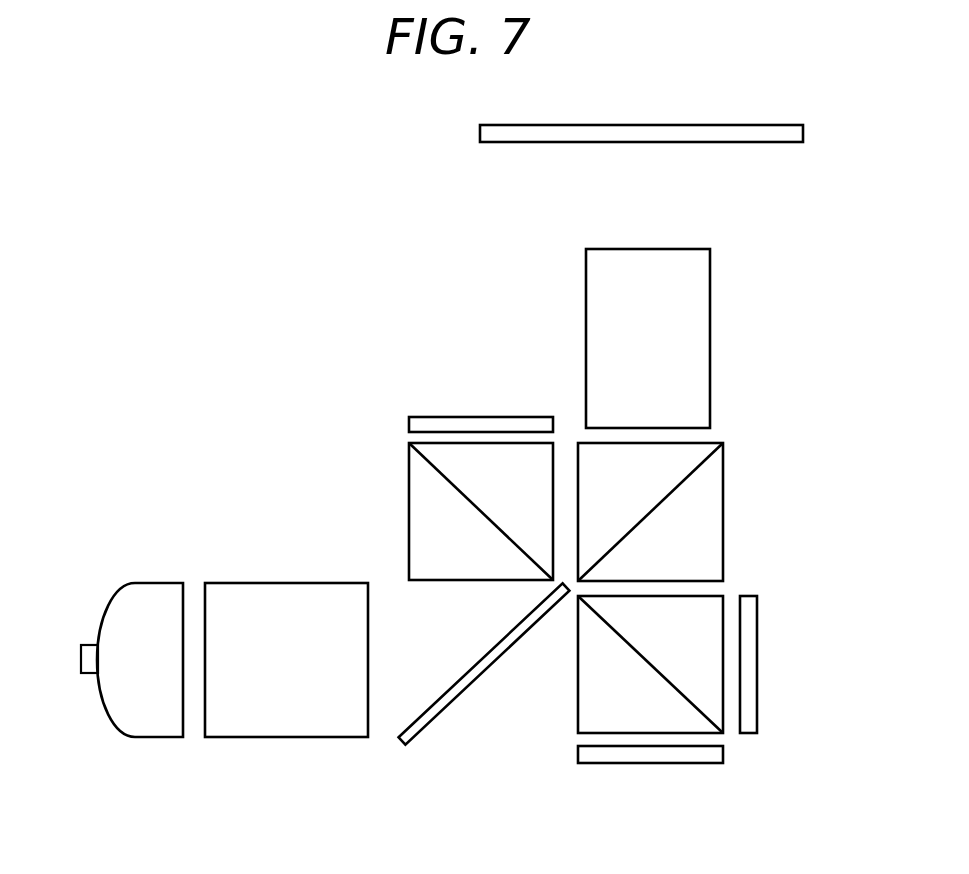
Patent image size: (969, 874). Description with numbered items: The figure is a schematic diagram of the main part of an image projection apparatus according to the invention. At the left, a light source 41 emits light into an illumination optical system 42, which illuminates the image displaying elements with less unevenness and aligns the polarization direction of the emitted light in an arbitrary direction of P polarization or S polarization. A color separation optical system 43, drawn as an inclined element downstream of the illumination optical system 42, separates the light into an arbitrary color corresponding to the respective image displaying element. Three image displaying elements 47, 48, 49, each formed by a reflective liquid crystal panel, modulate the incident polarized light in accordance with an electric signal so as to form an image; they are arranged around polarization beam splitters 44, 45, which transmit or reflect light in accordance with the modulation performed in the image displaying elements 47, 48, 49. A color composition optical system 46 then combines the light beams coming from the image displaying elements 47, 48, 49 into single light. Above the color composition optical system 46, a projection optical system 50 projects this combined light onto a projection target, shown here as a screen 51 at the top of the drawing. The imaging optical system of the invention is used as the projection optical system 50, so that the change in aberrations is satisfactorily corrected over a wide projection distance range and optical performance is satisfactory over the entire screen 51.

The light source 41 is at (113, 623).
The illumination optical system 42 is at (283, 722).
The color separation optical system 43 is at (418, 725).
The polarization beam splitter 44 is at (418, 502).
The polarization beam splitter 45 is at (590, 705).
The color composition optical system 46 is at (712, 527).
The image displaying element 47 is at (457, 424).
The image displaying element 48 is at (633, 757).
The image displaying element 49 is at (752, 682).
The projection optical system 50 is at (695, 348).
The screen 51 is at (785, 136).